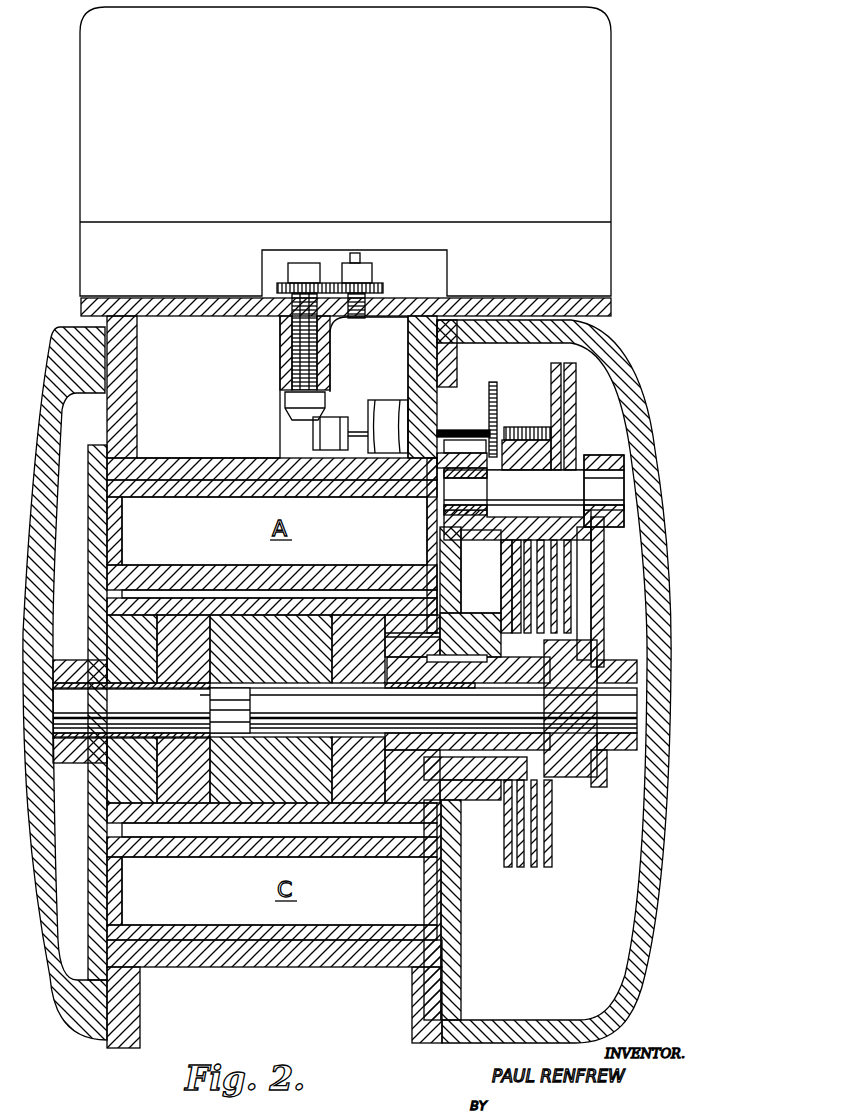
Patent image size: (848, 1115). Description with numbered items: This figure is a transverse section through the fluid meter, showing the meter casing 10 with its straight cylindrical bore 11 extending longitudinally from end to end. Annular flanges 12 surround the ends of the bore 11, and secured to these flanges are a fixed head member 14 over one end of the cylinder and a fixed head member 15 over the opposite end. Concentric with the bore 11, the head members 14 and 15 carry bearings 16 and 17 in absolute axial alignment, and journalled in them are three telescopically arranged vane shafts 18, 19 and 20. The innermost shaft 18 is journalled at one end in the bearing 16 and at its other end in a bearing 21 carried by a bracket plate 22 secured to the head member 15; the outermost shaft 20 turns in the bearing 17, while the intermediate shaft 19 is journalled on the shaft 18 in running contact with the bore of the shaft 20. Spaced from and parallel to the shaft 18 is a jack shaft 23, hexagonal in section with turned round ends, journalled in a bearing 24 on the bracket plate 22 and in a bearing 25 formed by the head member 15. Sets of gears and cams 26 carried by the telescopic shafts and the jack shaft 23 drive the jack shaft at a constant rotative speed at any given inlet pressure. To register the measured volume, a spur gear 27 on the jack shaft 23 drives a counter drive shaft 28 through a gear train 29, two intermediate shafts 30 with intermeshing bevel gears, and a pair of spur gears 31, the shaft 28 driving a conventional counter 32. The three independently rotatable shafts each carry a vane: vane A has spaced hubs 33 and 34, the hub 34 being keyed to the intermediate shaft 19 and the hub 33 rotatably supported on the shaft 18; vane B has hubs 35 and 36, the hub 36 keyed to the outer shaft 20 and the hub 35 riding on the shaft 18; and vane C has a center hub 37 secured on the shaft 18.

The meter casing 10 is at (140, 392).
The cylindrical bore 11 is at (178, 475).
The annular flanges 12 is at (142, 1005).
The fixed head member 14 is at (88, 938).
The fixed head member 15 is at (463, 923).
The bearing 16 is at (73, 760).
The bearing 17 is at (483, 615).
The innermost vane shaft 18 is at (380, 708).
The intermediate vane shaft 19 is at (425, 662).
The outermost vane shaft 20 is at (455, 650).
The bearing 21 is at (622, 665).
The bracket plate 22 is at (603, 616).
The jack shaft 23 is at (575, 472).
The bearing 24 is at (612, 527).
The bearing 25 is at (472, 460).
The sets of gears and cams 26 is at (590, 591).
The spur gear 27 is at (496, 532).
The counter drive shaft 28 is at (356, 263).
The gear train 29 is at (500, 388).
The intermediate shafts 30 is at (318, 380).
The spur gears 31 is at (320, 283).
The counter 32 is at (598, 106).
The hub 33 is at (180, 640).
The hub 34 is at (355, 635).
The hub 35 is at (125, 640).
The hub 36 is at (418, 795).
The center hub 37 is at (290, 660).